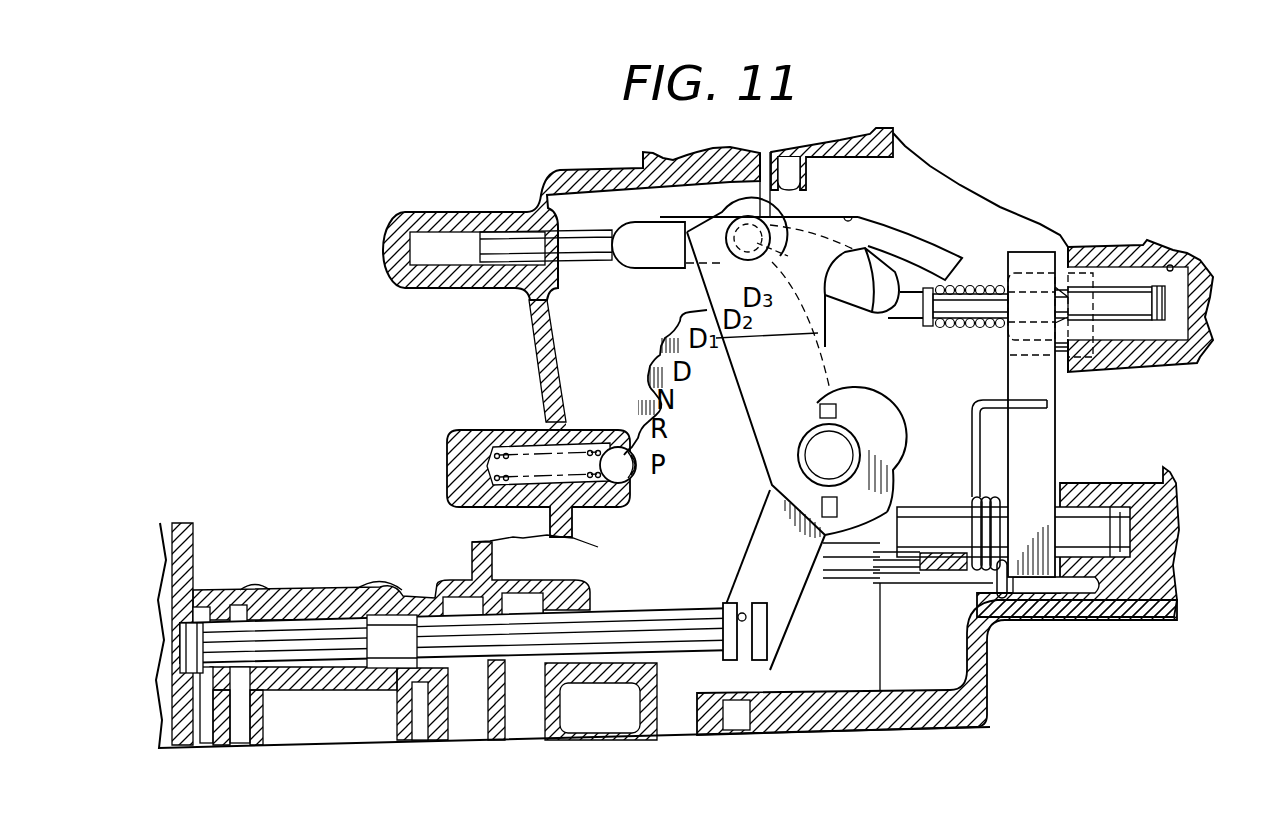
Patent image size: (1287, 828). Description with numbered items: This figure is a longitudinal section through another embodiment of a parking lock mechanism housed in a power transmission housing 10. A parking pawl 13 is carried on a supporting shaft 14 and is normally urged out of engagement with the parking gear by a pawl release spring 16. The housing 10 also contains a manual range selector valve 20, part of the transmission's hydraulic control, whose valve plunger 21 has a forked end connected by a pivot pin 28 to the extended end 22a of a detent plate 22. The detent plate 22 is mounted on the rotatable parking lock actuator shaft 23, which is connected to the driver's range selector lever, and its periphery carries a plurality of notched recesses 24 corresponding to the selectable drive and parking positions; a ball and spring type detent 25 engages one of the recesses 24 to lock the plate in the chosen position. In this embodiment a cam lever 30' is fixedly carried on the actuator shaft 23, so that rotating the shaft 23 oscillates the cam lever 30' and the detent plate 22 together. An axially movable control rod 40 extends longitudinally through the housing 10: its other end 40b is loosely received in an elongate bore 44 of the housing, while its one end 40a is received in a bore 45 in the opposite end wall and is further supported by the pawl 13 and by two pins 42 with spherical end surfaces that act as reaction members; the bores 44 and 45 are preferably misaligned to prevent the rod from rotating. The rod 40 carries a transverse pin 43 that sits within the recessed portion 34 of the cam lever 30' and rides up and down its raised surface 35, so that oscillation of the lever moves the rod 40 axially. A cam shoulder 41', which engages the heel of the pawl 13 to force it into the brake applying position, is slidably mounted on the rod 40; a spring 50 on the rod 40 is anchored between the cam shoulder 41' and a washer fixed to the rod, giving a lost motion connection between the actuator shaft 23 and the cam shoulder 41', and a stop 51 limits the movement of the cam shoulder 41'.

The power transmission housing 10 is at (985, 697).
The parking pawl 13 is at (1043, 394).
The supporting shaft 14 is at (1090, 513).
The pawl release spring 16 is at (992, 407).
The manual range selector valve 20 is at (300, 628).
The valve plunger 21 is at (670, 618).
The detent plate 22 is at (660, 350).
The extended end of detent plate 22a is at (748, 571).
The parking lock actuator shaft 23 is at (850, 447).
The notched recesses 24 is at (641, 432).
The ball and spring type detent 25 is at (610, 492).
The pivot pin 28 is at (742, 600).
The cam lever 30' is at (777, 434).
The recessed portion of cam lever 34 is at (790, 258).
The raised surface of cam lever 35 is at (856, 214).
The control rod element 40 is at (650, 228).
The one end of control rod 40a is at (1137, 315).
The other end of control rod 40b is at (497, 257).
The cam shoulder 41' is at (1043, 261).
The pins 42 is at (1062, 272).
The pin 43 is at (748, 218).
The elongate bore 44 is at (450, 233).
The bore 45 is at (1172, 264).
The spring 50 is at (977, 287).
The stop 51 is at (1163, 298).